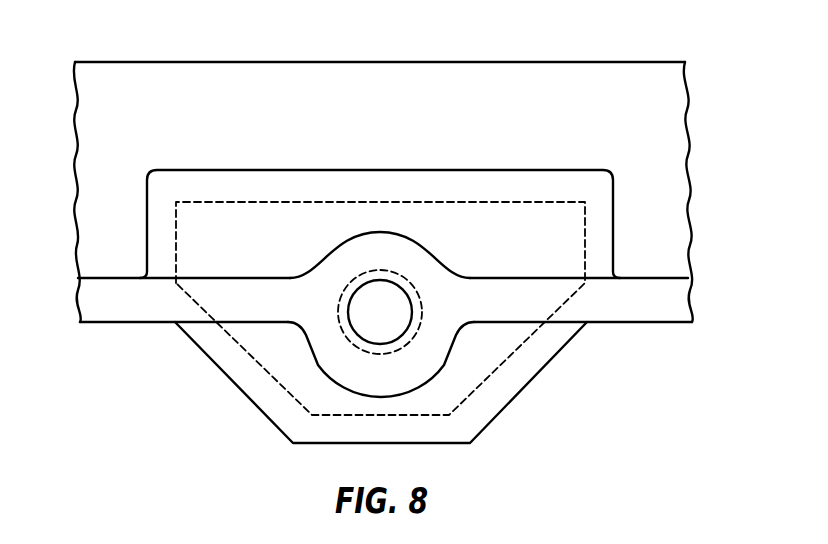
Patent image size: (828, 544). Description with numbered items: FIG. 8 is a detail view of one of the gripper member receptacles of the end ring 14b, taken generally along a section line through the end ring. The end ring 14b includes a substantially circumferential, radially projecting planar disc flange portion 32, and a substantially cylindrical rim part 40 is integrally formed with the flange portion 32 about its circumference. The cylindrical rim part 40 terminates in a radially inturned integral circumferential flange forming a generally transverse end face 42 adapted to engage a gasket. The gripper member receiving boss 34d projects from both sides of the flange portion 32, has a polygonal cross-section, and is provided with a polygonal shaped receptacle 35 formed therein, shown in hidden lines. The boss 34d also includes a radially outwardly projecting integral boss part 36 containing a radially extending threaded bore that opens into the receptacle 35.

The end ring 14b is at (380, 50).
The cylindrical rim part 40 is at (242, 80).
The transverse end face 42 is at (558, 60).
The gripper member receiving boss 34d is at (553, 178).
The flange portion 32 is at (128, 322).
The receptacle 35 is at (288, 390).
The boss part 36 is at (443, 370).